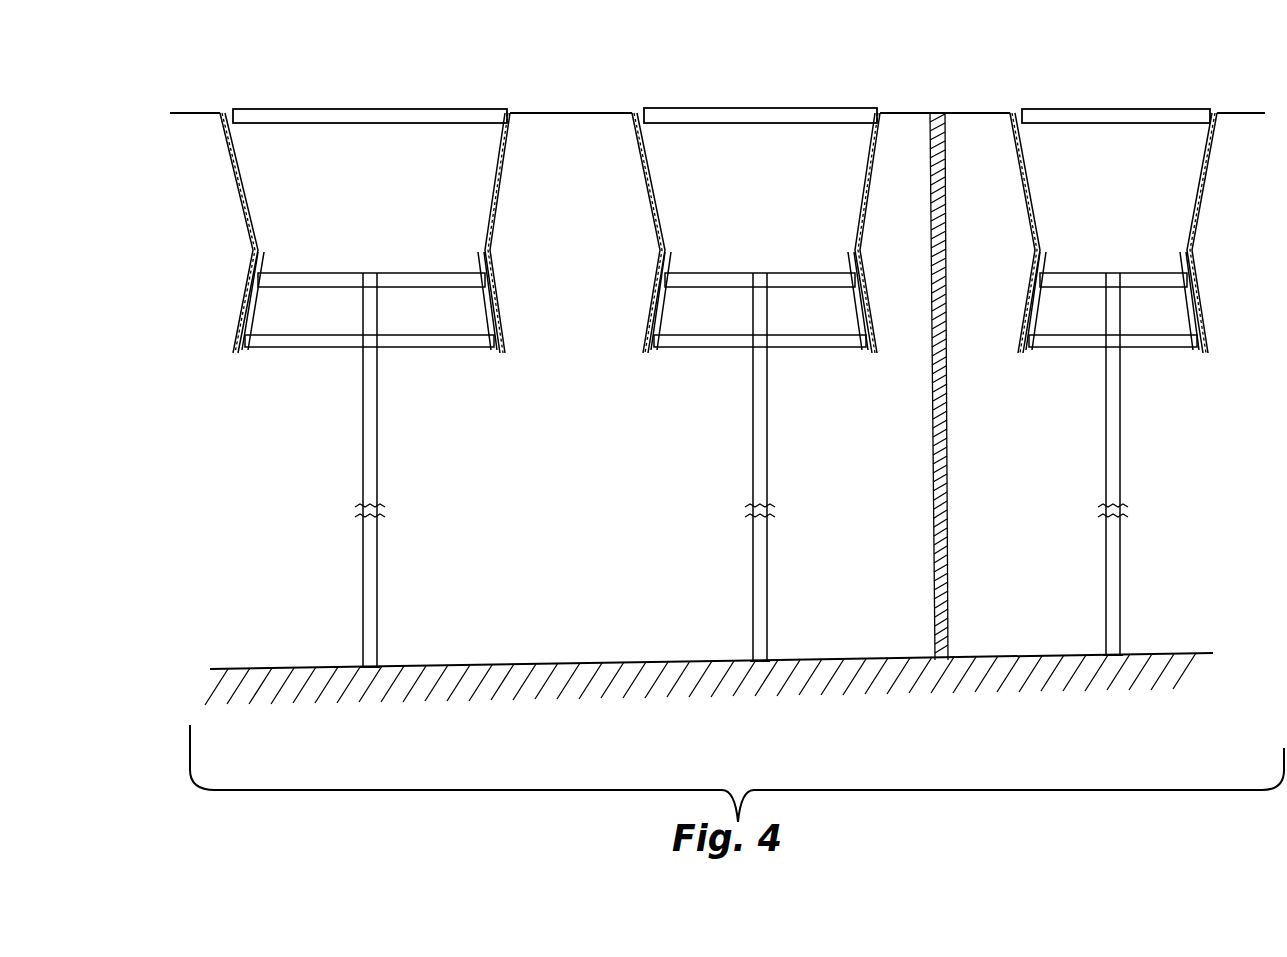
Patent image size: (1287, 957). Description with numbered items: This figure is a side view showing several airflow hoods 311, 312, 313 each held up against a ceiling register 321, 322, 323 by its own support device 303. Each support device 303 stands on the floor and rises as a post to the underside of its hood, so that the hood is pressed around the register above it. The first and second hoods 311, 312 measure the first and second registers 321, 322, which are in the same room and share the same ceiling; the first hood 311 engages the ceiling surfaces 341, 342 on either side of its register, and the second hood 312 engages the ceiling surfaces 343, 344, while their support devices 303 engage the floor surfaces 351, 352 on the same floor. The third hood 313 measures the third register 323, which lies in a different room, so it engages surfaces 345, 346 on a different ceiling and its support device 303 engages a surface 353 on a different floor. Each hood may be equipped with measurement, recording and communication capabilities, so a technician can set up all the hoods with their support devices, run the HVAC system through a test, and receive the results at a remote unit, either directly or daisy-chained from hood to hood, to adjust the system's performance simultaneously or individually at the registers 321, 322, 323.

The support device 303 is at (353, 477).
The airflow hood 311 is at (255, 285).
The airflow hood 312 is at (657, 270).
The airflow hood 313 is at (1038, 255).
The register 321 is at (330, 118).
The register 322 is at (743, 120).
The register 323 is at (1105, 113).
The ceiling surface 341 is at (185, 114).
The ceiling surface 342 is at (533, 112).
The ceiling surface 343 is at (617, 112).
The ceiling surface 344 is at (908, 112).
The ceiling surface 345 is at (987, 112).
The ceiling surface 346 is at (1230, 112).
The floor surface 351 is at (373, 670).
The floor surface 352 is at (765, 666).
The floor surface 353 is at (1117, 660).